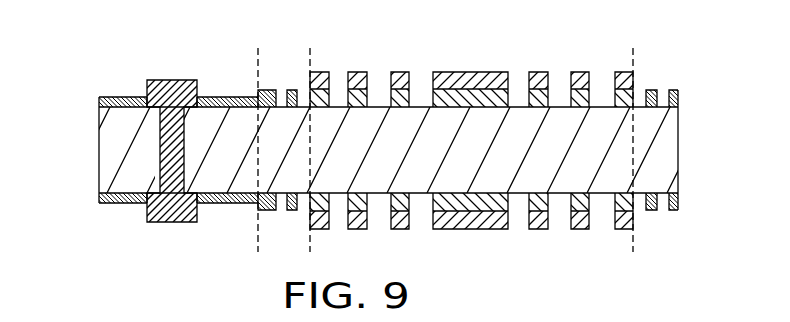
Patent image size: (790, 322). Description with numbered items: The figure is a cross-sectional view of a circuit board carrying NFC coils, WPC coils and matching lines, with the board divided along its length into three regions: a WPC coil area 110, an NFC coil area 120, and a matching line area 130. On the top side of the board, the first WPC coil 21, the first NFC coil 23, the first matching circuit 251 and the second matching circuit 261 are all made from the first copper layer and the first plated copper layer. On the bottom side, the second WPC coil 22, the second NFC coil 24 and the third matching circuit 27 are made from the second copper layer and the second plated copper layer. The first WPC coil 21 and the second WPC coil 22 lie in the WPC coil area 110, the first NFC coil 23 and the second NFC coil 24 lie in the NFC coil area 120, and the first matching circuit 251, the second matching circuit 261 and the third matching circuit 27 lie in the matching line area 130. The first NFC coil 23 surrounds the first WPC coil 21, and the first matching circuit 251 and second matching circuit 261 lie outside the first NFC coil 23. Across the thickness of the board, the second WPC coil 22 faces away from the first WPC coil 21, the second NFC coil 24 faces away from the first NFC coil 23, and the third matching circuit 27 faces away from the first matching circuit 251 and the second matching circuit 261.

The WPC coil area 110 is at (549, 27).
The NFC coil area 120 is at (283, 49).
The matching line area 130 is at (126, 41).
The first WPC coil 21 is at (488, 95).
The second WPC coil 22 is at (478, 205).
The first NFC coil 23 is at (652, 90).
The second NFC coil 24 is at (673, 210).
The first matching circuit 251 is at (120, 99).
The second matching circuit 261 is at (118, 203).
The third matching circuit 27 is at (224, 205).